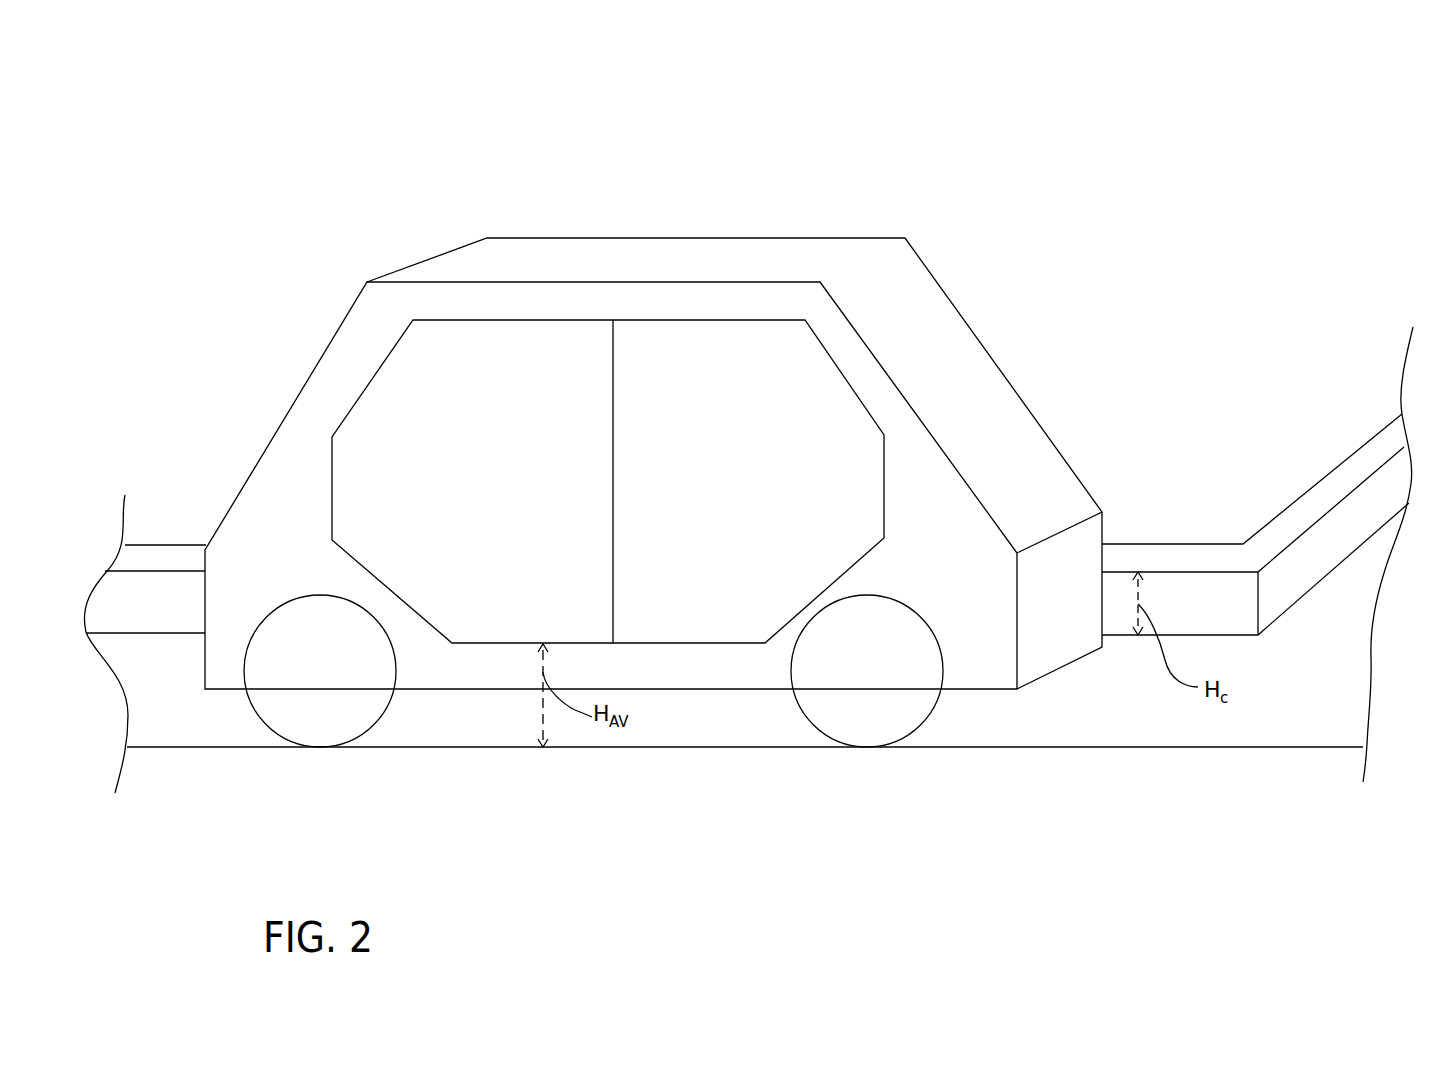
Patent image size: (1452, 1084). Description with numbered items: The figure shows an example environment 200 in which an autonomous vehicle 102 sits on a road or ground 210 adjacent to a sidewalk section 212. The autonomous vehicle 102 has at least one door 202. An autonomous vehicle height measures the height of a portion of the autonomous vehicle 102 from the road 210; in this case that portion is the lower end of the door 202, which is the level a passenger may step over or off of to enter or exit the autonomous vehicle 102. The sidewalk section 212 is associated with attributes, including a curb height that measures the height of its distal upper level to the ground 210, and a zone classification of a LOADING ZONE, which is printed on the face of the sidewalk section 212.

The environment 200 is at (138, 66).
The autonomous vehicle 102 is at (601, 314).
The door 202 is at (512, 482).
The road or ground 210 is at (1062, 747).
The sidewalk section 212 is at (1292, 522).